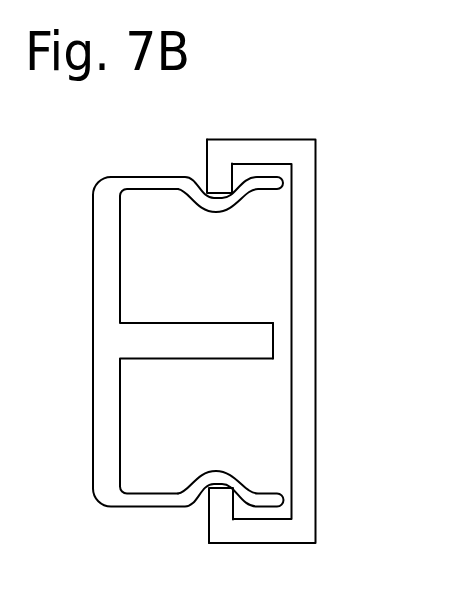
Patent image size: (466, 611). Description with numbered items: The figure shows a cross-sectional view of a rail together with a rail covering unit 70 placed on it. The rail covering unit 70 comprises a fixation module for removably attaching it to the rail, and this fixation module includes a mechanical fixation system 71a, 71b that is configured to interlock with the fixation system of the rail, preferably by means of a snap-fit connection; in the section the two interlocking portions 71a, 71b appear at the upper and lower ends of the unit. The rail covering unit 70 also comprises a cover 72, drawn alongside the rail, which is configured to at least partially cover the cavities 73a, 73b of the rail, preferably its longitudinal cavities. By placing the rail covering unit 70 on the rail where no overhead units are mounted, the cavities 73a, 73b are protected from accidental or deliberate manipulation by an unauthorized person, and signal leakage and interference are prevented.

The rail covering unit 70 is at (339, 176).
The mechanical fixation system 71a is at (218, 172).
The mechanical fixation system 71b is at (223, 508).
The cover 72 is at (302, 281).
The cavity 73a is at (221, 276).
The cavity 73b is at (218, 422).